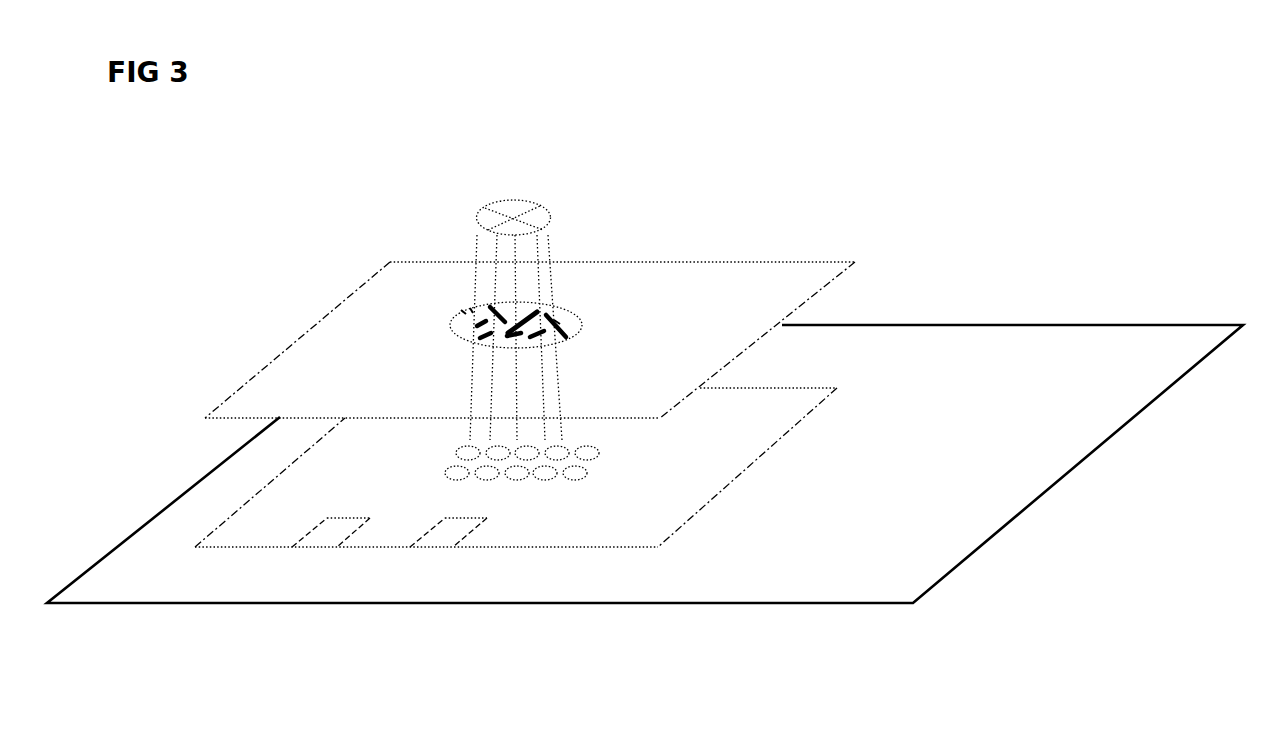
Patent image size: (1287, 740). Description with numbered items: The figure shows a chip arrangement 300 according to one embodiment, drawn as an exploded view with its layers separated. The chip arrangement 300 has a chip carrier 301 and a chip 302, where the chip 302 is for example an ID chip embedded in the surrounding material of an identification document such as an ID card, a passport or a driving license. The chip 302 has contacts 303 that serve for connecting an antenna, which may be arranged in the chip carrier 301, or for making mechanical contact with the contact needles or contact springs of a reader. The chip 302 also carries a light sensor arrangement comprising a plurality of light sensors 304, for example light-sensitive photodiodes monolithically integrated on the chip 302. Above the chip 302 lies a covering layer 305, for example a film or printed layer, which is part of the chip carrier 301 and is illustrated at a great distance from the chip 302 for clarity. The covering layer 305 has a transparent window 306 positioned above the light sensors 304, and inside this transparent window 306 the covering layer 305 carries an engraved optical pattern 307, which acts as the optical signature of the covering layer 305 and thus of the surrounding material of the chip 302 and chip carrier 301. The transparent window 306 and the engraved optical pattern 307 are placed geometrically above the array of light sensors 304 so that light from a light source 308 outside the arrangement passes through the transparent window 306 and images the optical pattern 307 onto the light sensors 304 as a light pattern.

The chip arrangement 300 is at (1128, 118).
The chip carrier 301 is at (1103, 322).
The chip 302 is at (838, 391).
The contacts 303 is at (322, 535).
The light sensors 304 is at (577, 457).
The covering layer 305 is at (856, 263).
The transparent window 306 is at (581, 320).
The engraved optical pattern 307 is at (458, 328).
The light source 308 is at (545, 208).